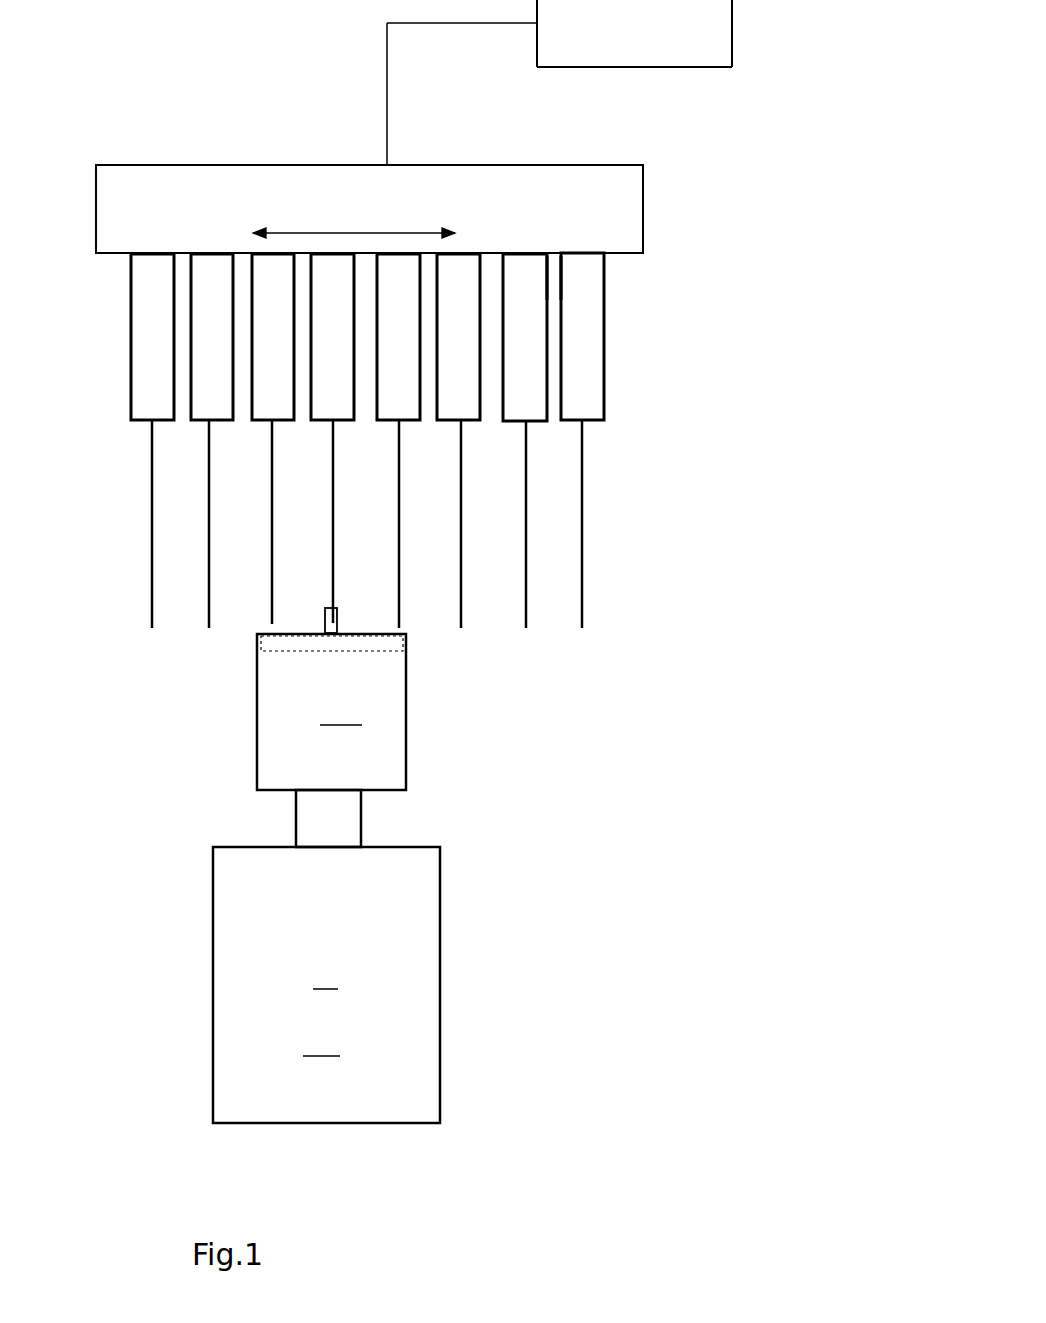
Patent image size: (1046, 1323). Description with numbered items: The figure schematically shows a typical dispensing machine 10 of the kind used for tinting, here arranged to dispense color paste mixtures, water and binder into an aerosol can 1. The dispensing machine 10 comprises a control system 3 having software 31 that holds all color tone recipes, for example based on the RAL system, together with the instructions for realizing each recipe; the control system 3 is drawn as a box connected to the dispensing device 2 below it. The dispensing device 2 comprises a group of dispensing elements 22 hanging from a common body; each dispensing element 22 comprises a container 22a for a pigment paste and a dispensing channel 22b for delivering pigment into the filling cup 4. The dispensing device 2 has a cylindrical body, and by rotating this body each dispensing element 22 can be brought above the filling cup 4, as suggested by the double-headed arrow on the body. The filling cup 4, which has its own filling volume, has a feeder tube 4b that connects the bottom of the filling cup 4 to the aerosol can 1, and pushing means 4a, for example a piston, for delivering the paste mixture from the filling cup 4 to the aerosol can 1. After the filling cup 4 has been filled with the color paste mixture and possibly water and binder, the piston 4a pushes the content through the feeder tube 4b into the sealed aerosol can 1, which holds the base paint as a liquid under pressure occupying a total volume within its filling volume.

The aerosol can 1 is at (427, 873).
The dispensing device 2 is at (683, 252).
The control system 3 is at (559, 82).
The software 31 is at (698, 38).
The filling cup 4 is at (393, 713).
The pushing means 4a is at (285, 645).
The feeder tube 4b is at (345, 817).
The dispensing machine 10 is at (718, 154).
The dispensing element 22 is at (146, 325).
The container 22a is at (559, 280).
The dispensing channel 22b is at (582, 512).